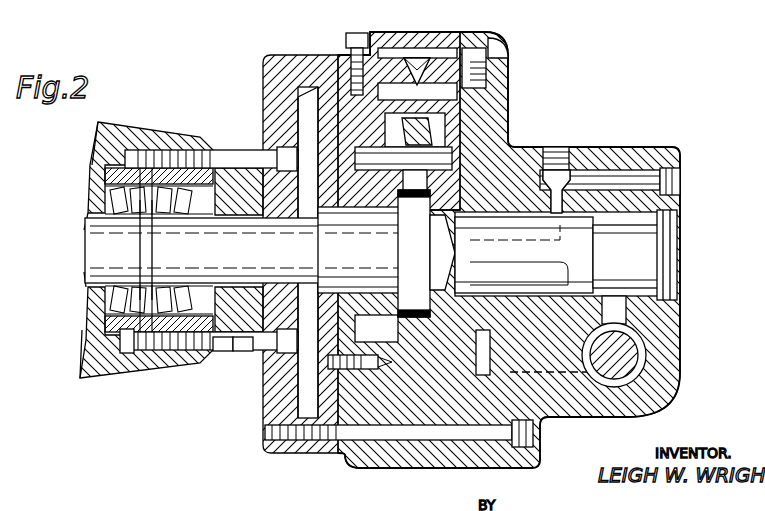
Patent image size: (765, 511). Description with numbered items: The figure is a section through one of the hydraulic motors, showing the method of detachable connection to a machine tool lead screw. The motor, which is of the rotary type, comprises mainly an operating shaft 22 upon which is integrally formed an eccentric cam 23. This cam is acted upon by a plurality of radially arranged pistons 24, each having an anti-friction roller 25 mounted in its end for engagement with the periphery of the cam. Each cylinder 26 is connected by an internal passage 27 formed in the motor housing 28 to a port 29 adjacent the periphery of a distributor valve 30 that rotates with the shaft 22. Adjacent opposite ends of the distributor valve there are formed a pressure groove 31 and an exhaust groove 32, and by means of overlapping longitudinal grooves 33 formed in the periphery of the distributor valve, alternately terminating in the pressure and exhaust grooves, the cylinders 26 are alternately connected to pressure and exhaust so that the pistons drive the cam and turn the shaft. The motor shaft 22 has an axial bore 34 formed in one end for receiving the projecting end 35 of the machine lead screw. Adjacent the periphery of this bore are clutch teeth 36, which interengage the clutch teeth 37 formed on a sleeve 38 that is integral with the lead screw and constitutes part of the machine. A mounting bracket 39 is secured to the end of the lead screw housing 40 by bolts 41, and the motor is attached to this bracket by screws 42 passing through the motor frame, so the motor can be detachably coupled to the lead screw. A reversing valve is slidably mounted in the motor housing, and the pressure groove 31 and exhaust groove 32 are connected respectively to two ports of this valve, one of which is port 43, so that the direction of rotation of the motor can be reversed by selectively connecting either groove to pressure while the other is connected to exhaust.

The operating shaft 22 is at (446, 345).
The eccentric cam 23 is at (422, 370).
The pistons 24 is at (432, 66).
The anti-friction rollers 25 is at (436, 128).
The cylinder 26 is at (424, 52).
The internal passage 27 is at (480, 143).
The motor housing 28 is at (617, 148).
The port 29 is at (590, 232).
The distributor valve 30 is at (598, 203).
The pressure groove 31 is at (615, 290).
The exhaust groove 32 is at (515, 280).
The longitudinal grooves 33 is at (636, 268).
The axial bore 34 is at (420, 240).
The projecting end 35 is at (256, 345).
The clutch teeth 36 is at (256, 370).
The clutch teeth 37 is at (289, 219).
The sleeve 38 is at (190, 362).
The mounting bracket 39 is at (266, 93).
The lead screw housing 40 is at (138, 133).
The bolts 41 is at (245, 149).
The screws 42 is at (353, 458).
The port 43 is at (563, 368).